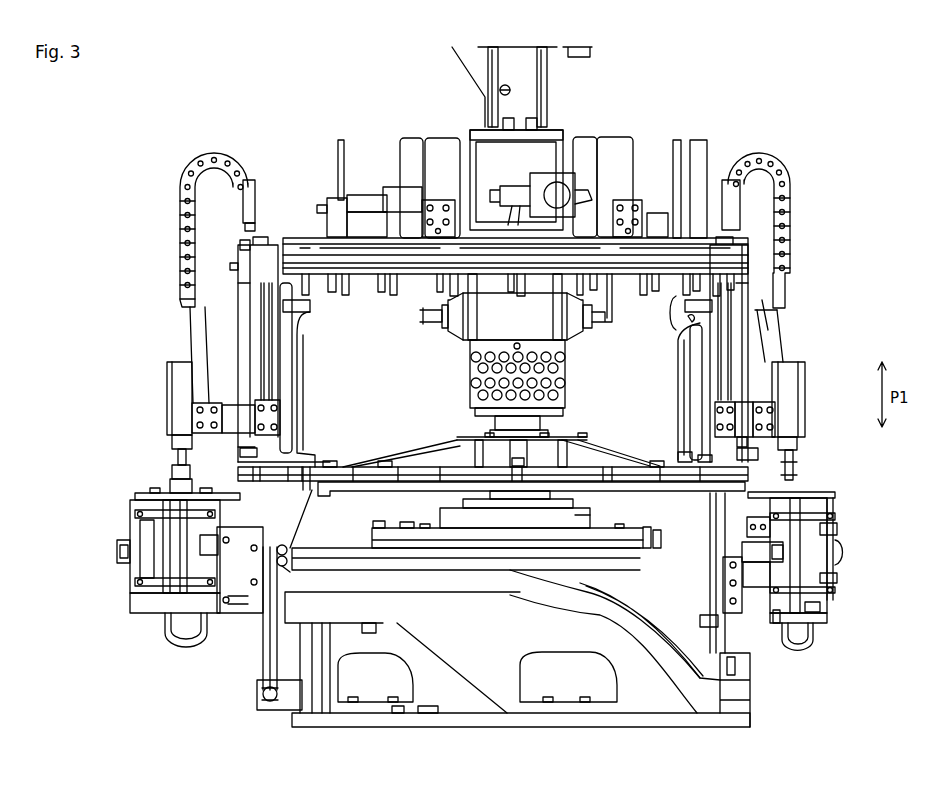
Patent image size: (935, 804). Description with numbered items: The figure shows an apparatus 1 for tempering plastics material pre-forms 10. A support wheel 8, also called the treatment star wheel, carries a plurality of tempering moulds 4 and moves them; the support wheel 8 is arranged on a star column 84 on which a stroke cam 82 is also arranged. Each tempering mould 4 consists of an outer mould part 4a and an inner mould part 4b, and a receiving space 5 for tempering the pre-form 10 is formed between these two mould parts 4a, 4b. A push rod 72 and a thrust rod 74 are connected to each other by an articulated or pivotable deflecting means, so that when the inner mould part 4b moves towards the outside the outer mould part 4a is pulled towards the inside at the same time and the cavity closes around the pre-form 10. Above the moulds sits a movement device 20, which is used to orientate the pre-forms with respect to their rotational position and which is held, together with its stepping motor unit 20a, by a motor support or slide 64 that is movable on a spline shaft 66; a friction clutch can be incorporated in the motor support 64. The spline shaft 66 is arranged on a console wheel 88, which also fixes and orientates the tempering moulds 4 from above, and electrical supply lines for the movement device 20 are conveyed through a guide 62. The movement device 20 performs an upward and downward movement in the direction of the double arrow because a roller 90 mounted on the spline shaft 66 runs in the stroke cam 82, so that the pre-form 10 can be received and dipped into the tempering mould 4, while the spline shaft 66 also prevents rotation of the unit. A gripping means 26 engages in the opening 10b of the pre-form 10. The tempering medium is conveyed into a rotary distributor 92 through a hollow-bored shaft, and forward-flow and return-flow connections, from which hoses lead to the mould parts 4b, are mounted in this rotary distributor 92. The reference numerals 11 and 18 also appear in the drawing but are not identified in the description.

The apparatus 1 is at (292, 124).
The tempering mould 4 is at (136, 488).
The outer mould part 4a is at (150, 617).
The inner mould part 4b is at (197, 578).
The receiving space 5 is at (800, 568).
The support wheel 8 is at (624, 452).
The plastics material pre-form 10 is at (167, 482).
The opening 10b is at (190, 489).
The nozzle tip 11 is at (170, 462).
The left linear actuator block 18 is at (182, 420).
The movement device 20 is at (806, 385).
The stepping motor unit 20a is at (806, 422).
The gripping means 26 is at (186, 477).
The guide 62 is at (790, 208).
The motor support 64 is at (757, 412).
The spline shaft 66 is at (267, 640).
The push rod 72 is at (800, 493).
The thrust rod 74 is at (835, 590).
The stroke cam 82 is at (665, 637).
The star column 84 is at (383, 540).
The console wheel 88 is at (668, 268).
The roller 90 is at (300, 716).
The rotary distributor 92 is at (560, 359).